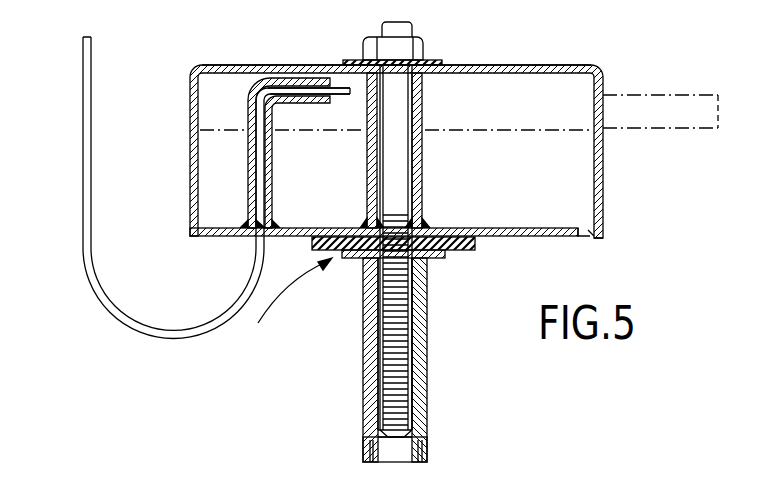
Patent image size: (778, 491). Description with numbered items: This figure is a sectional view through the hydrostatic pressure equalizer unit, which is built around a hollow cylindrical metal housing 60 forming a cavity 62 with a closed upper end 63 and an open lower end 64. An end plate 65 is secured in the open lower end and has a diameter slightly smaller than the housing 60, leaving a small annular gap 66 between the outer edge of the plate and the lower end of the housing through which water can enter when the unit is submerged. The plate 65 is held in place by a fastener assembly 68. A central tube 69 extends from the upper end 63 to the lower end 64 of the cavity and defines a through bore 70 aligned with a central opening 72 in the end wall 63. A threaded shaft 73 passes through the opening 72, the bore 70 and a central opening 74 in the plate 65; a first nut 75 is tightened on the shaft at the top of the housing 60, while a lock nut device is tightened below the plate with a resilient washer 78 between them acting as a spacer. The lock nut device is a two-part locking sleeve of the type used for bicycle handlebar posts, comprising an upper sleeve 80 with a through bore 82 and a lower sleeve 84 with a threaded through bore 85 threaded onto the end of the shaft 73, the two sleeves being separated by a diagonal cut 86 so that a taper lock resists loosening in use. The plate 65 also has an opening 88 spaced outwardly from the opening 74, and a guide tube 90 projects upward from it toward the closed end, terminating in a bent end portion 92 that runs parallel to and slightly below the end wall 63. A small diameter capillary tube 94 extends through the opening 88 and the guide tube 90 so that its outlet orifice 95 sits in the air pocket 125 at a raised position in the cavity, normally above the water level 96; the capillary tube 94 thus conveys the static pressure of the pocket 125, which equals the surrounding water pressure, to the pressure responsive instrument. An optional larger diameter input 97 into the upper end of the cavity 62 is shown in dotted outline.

The housing 60 is at (192, 107).
The cavity 62 is at (480, 213).
The closed upper end 63 is at (510, 66).
The open lower end 64 is at (603, 235).
The end plate 65 is at (552, 228).
The annular gap 66 is at (585, 233).
The fastener assembly 68 is at (283, 307).
The tube 69 is at (423, 163).
The through bore 70 is at (423, 117).
The central opening 72 is at (458, 76).
The threaded shaft 73 is at (400, 388).
The central opening 74 is at (365, 229).
The first nut 75 is at (423, 48).
The resilient washer 78 is at (470, 250).
The upper sleeve 80 is at (365, 286).
The through bore 82 is at (427, 287).
The lower sleeve 84 is at (421, 441).
The threaded through bore 85 is at (376, 430).
The diagonal cut 86 is at (427, 313).
The opening 88 is at (245, 238).
The guide tube 90 is at (271, 146).
The bent end portion 92 is at (308, 82).
The capillary tube 94 is at (83, 90).
The outlet orifice 95 is at (342, 104).
The water level 96 is at (508, 130).
The input 97 is at (650, 94).
The air pocket 125 is at (248, 107).